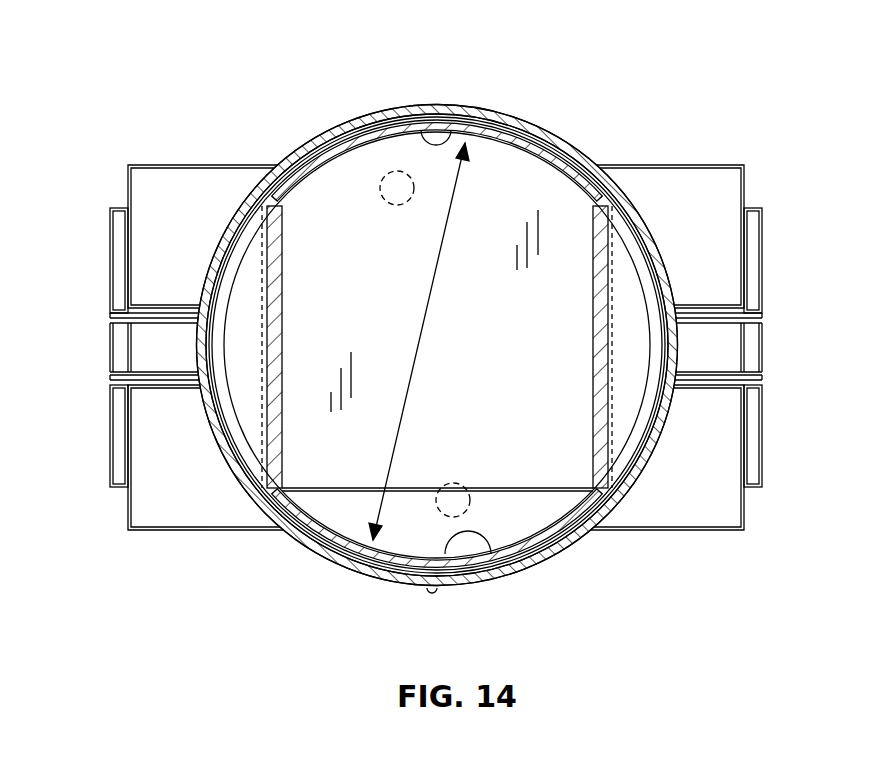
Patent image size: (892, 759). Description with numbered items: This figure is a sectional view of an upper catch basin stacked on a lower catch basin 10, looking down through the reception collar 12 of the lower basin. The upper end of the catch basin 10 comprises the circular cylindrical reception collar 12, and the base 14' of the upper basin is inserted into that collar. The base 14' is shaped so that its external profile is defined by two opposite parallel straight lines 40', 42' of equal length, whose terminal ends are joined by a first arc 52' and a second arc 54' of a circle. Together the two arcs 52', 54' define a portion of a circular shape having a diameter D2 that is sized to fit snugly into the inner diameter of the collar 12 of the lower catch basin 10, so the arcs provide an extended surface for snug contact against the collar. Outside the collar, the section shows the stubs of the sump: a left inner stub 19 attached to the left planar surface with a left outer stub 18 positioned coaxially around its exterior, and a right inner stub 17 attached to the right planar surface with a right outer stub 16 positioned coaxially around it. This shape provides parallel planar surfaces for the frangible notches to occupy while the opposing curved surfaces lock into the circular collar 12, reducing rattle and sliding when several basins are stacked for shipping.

The catch basin 10 is at (426, 352).
The reception collar 12 is at (565, 548).
The base 14' is at (437, 344).
The right outer stub 16 is at (698, 198).
The right inner stub 17 is at (750, 272).
The left outer stub 18 is at (171, 500).
The left inner stub 19 is at (117, 462).
The straight line 40' is at (306, 347).
The straight line 42' is at (558, 347).
The first arc 52' is at (437, 128).
The second arc 54' is at (437, 568).
The diameter D2 is at (436, 272).